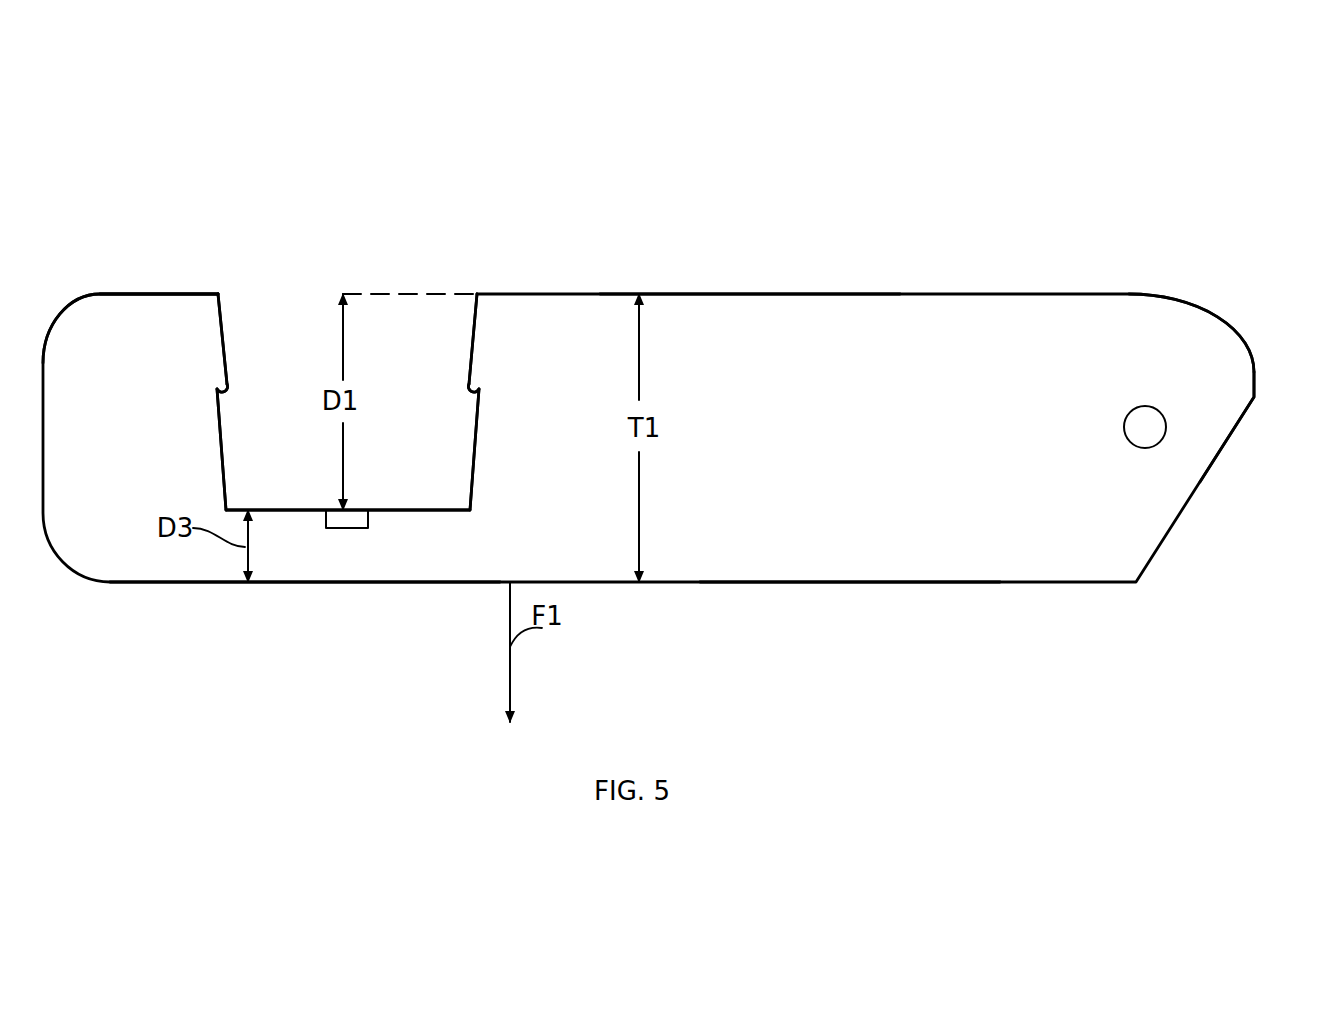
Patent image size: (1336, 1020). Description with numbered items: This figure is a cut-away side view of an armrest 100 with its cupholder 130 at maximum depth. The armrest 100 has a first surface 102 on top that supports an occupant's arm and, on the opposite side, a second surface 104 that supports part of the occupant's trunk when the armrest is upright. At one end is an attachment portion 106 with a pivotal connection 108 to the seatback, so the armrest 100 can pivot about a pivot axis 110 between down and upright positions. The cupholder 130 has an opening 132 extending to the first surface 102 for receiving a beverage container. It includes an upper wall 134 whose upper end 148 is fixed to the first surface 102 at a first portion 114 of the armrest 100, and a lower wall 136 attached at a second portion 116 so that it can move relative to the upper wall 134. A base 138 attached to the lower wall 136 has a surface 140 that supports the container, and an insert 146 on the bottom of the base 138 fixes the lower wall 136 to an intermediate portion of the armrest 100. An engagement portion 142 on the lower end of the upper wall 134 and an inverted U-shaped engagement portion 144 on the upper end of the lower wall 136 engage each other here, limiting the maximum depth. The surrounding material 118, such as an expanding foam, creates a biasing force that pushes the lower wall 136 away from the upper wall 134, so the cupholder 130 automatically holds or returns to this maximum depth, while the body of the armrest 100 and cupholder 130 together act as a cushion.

The armrest 100 is at (789, 200).
The first surface 102 is at (718, 294).
The second surface 104 is at (879, 582).
The attachment portion 106 is at (1194, 256).
The pivotal connection 108 is at (1246, 276).
The pivot axis 110 is at (1142, 431).
The first portion 114 is at (188, 294).
The second portion 116 is at (333, 528).
The material 118 is at (495, 481).
The cupholder 130 is at (366, 260).
The opening 132 is at (225, 325).
The upper wall 134 is at (479, 320).
The lower wall 136 is at (220, 463).
The base 138 is at (422, 510).
The surface 140 is at (282, 510).
The engagement portion 142 is at (470, 387).
The engagement portion 144 is at (480, 388).
The insert 146 is at (362, 520).
The upper end 148 is at (212, 294).